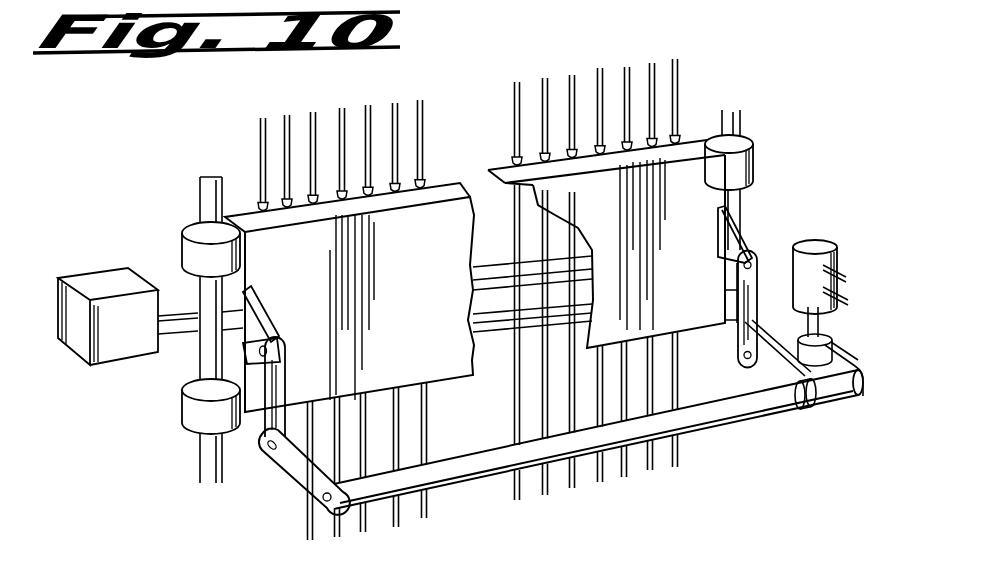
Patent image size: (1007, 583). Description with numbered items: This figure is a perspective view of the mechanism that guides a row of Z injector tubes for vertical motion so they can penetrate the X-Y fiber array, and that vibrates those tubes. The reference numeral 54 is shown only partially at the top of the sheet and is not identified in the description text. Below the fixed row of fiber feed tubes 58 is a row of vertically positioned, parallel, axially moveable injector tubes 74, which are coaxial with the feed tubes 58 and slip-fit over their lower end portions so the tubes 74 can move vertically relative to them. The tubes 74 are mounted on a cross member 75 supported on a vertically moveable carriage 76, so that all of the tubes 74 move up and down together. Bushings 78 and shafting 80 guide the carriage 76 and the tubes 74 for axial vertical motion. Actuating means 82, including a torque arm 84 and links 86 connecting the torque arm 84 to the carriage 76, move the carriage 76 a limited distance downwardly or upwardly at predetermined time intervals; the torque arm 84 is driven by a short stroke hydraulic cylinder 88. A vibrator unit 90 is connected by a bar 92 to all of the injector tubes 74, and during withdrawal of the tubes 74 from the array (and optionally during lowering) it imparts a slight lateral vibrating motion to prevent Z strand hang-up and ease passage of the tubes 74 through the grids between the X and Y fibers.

The frame 54 is at (567, 5).
The fiber feed tubes 58 is at (632, 88).
The injector tubes 74 is at (540, 413).
The cross member 75 is at (483, 320).
The carriage 76 is at (444, 186).
The bushings 78 is at (187, 243).
The shafting 80 is at (203, 362).
The actuating means 82 is at (758, 268).
The torque arm 84 is at (826, 393).
The links 86 is at (257, 332).
The hydraulic cylinder 88 is at (823, 245).
The vibrator unit 90 is at (124, 278).
The bar 92 is at (482, 275).